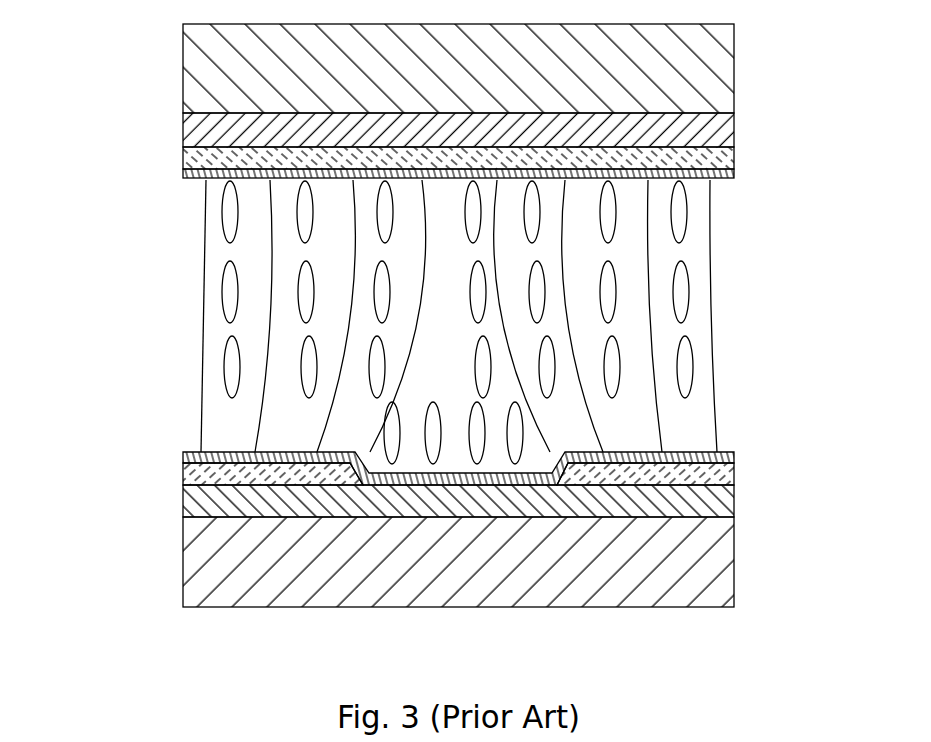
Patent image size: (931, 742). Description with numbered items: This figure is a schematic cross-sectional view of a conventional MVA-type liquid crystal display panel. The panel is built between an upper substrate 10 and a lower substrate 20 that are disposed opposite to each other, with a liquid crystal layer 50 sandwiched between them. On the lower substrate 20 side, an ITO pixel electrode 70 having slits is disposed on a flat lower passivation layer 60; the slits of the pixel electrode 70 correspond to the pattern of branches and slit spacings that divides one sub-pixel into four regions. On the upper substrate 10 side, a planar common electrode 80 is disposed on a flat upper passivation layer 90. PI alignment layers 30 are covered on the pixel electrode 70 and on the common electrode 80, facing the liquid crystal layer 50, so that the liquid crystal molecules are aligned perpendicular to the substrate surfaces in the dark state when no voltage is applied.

The upper substrate 10 is at (183, 92).
The lower substrate 20 is at (183, 568).
The PI alignment layers 30 is at (183, 177).
The liquid crystal layer 50 is at (675, 297).
The lower passivation layer 60 is at (697, 508).
The pixel electrode 70 is at (710, 472).
The common electrode 80 is at (670, 160).
The upper passivation layer 90 is at (662, 125).